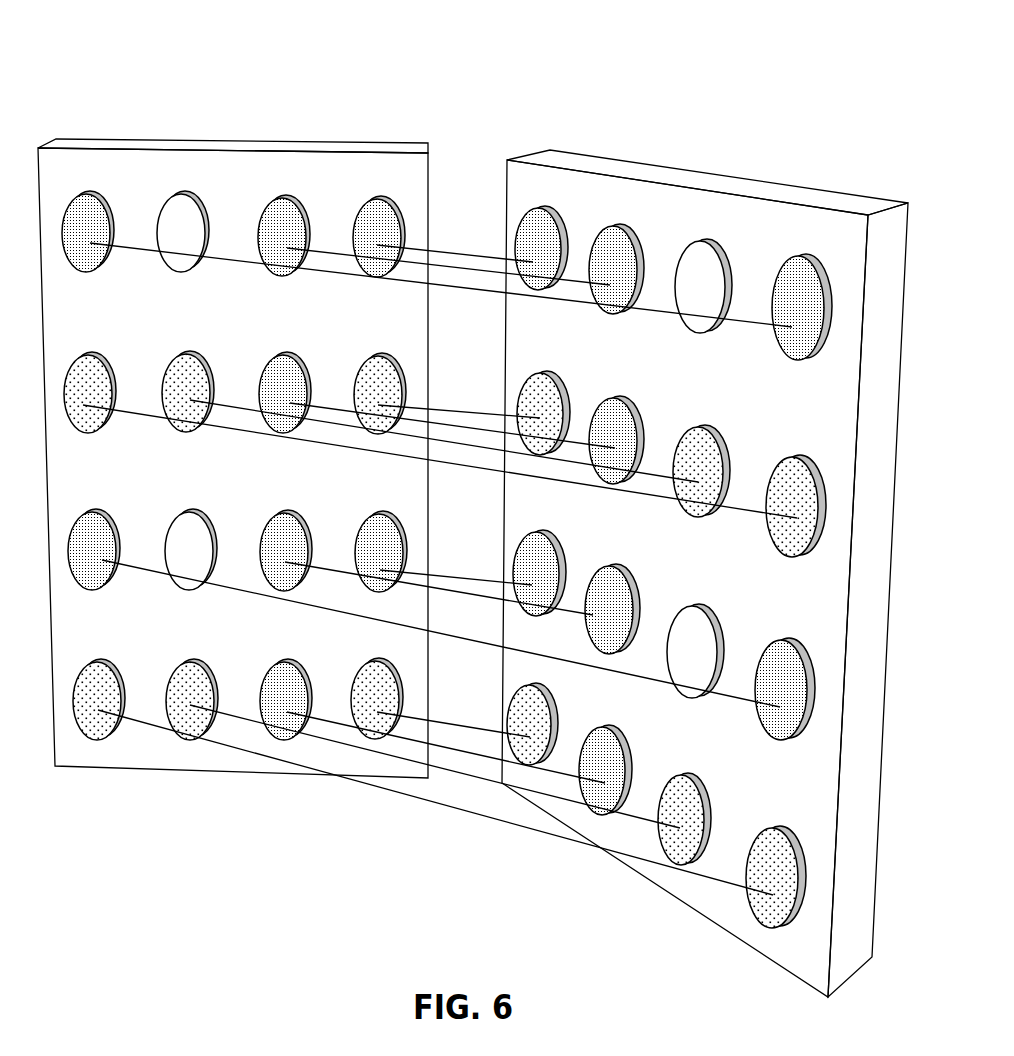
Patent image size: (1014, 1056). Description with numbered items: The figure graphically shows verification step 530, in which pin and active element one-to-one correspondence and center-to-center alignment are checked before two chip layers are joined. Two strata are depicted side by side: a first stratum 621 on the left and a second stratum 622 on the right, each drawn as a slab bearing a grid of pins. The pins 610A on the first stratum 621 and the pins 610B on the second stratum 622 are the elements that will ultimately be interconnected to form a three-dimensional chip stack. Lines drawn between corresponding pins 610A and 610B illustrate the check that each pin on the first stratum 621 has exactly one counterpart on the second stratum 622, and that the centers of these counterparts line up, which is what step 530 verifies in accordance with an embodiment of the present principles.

The verification step 530 is at (507, 40).
The pins on first stratum 610A is at (259, 116).
The pins on second stratum 610B is at (744, 142).
The first stratum 621 is at (218, 148).
The second stratum 622 is at (690, 190).